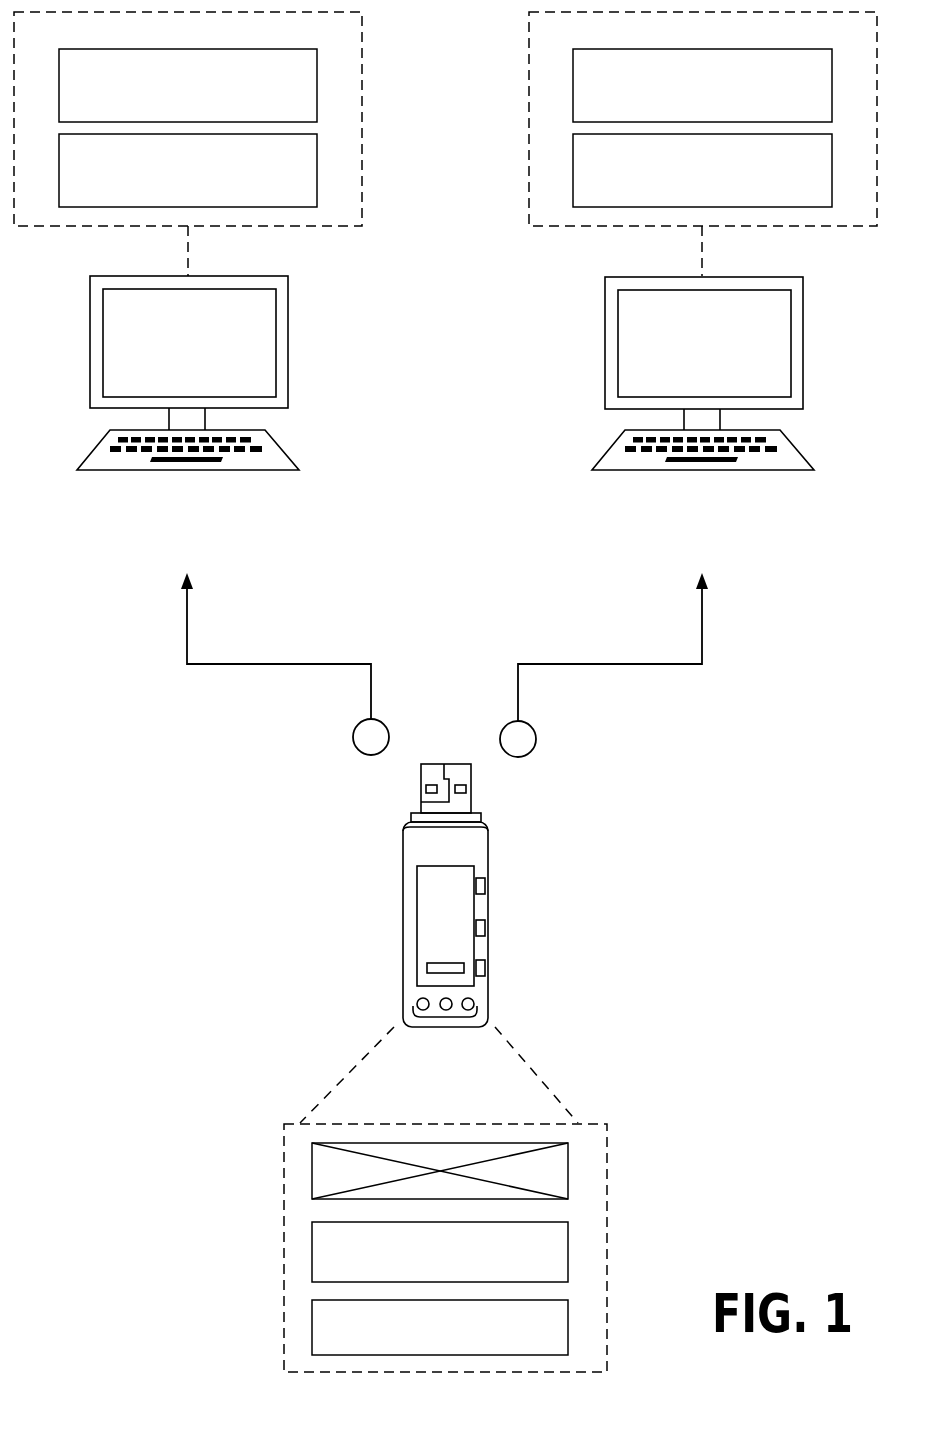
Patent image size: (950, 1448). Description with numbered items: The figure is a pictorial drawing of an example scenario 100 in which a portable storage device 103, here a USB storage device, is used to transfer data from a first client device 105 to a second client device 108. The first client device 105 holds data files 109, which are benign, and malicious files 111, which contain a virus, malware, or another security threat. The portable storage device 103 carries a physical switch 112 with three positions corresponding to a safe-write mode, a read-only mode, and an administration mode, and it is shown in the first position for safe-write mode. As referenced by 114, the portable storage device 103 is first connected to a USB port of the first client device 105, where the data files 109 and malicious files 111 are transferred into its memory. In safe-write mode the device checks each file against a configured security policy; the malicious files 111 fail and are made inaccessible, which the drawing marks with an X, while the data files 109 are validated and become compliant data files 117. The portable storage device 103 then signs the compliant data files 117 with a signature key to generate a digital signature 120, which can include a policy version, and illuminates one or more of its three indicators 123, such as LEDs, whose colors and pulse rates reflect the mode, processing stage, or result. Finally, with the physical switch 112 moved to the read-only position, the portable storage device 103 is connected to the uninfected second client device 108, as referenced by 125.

The example scenario 100 is at (777, 950).
The portable storage device 103 is at (464, 923).
The first client device 105 is at (187, 408).
The second client device 108 is at (704, 408).
The data files 109 is at (267, 185).
The malicious files 111 is at (292, 98).
The physical switch 112 is at (491, 866).
The connection to first client device 114 is at (254, 702).
The compliant data files 117 is at (820, 98).
The digital signature 120 is at (792, 185).
The indicators 123 is at (448, 1017).
The connection to second client device 125 is at (687, 700).